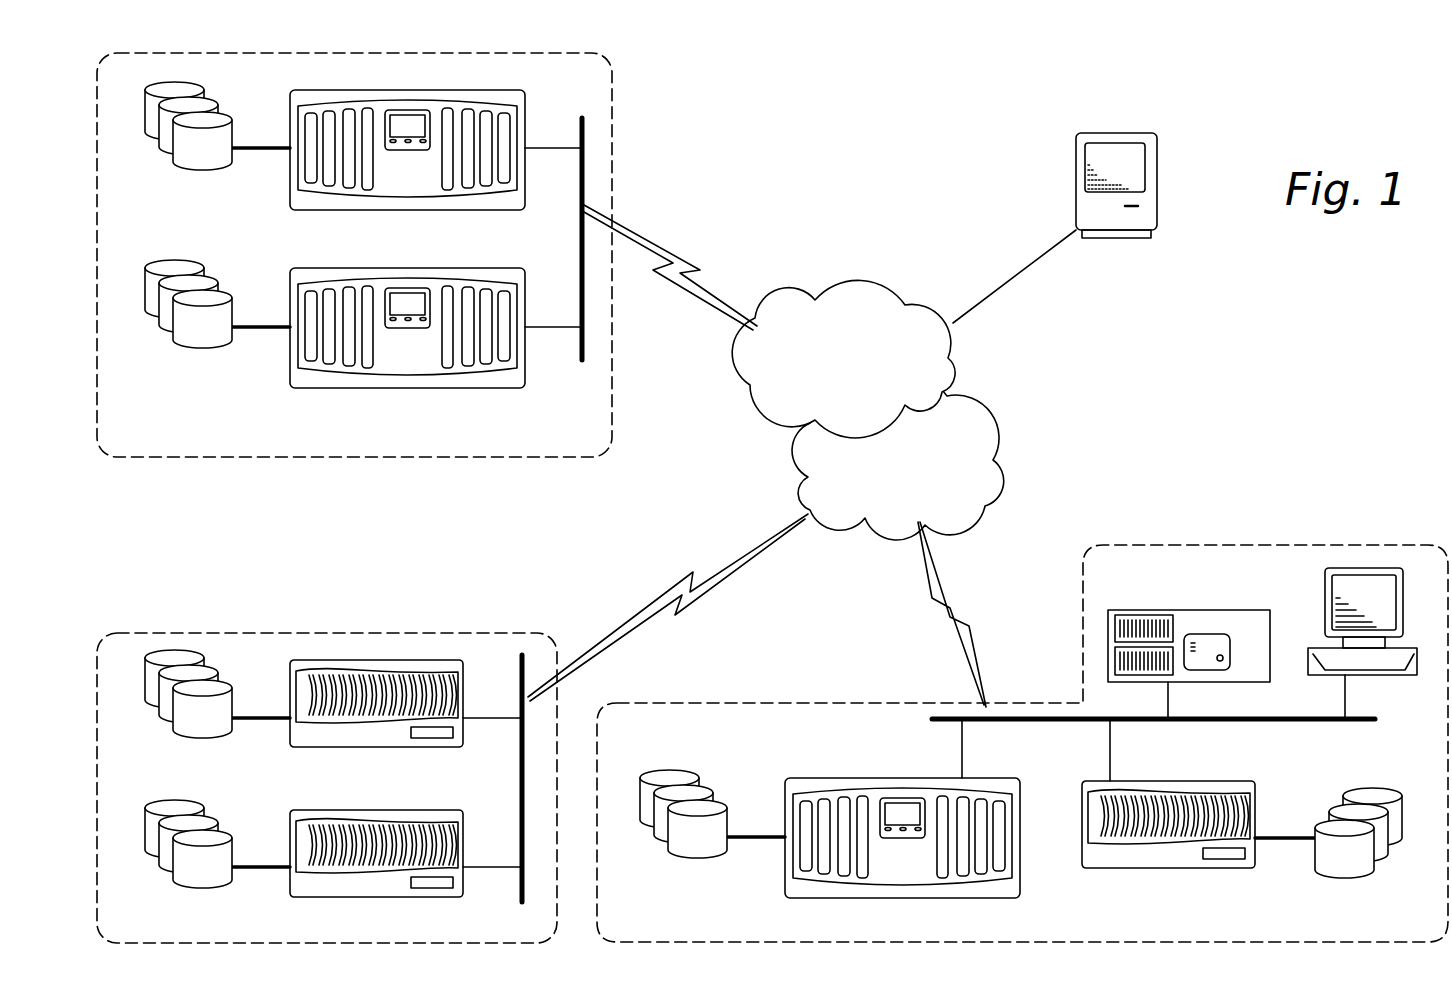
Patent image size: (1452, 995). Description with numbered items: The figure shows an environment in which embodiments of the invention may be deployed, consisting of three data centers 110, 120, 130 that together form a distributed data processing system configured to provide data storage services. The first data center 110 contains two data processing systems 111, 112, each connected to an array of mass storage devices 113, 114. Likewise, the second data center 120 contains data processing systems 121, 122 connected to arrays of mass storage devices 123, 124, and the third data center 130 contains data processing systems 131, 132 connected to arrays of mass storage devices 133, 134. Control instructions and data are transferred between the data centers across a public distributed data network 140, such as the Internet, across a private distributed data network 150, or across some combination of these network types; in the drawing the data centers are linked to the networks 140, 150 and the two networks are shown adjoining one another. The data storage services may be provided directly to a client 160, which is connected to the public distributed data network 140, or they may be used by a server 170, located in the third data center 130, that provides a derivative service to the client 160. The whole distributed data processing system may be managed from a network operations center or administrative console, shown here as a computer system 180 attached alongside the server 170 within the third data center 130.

The data center 110 is at (166, 457).
The data processing system 111 is at (495, 212).
The data processing system 112 is at (495, 390).
The array of mass storage devices 113 is at (172, 162).
The array of mass storage devices 114 is at (172, 340).
The data center 120 is at (170, 633).
The data processing system 121 is at (436, 748).
The data processing system 122 is at (436, 898).
The array of mass storage devices 123 is at (172, 731).
The array of mass storage devices 124 is at (172, 881).
The data center 130 is at (740, 703).
The data processing system 131 is at (990, 898).
The data processing system 132 is at (1230, 870).
The array of mass storage devices 133 is at (670, 855).
The array of mass storage devices 134 is at (1378, 872).
The public distributed data network 140 is at (934, 394).
The private distributed data network 150 is at (981, 500).
The client 160 is at (1155, 228).
The server 170 is at (1228, 610).
The computer system 180 is at (1403, 675).